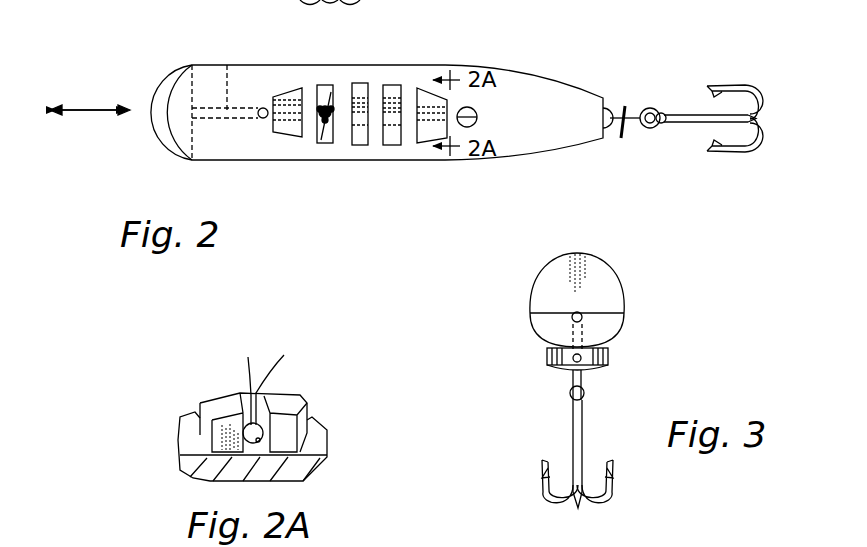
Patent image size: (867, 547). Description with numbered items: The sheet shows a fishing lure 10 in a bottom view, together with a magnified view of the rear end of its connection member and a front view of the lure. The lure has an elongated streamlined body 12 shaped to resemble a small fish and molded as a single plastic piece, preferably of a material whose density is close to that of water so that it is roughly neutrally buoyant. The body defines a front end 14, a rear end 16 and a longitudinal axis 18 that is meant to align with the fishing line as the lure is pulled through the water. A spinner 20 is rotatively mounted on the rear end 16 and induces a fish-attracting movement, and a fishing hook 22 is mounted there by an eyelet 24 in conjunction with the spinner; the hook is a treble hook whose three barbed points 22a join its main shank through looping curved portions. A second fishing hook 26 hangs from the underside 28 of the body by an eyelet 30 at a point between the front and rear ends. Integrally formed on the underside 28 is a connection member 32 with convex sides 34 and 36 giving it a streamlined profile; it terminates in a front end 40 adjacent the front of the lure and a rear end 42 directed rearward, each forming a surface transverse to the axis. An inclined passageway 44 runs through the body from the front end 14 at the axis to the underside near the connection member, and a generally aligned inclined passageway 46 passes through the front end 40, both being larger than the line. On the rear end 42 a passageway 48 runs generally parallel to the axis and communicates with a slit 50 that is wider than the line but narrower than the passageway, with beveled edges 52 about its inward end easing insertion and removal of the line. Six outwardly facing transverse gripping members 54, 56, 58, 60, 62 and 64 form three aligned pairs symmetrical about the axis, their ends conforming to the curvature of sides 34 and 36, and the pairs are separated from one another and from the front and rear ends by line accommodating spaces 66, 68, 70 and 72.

In FIG. 2, the fishing lure 10 is at (549, 69).
In FIG. 2, the body 12 is at (566, 84).
In FIG. 2A, the body 12 is at (188, 452).
In FIG. 3, the body 12 is at (626, 312).
In FIG. 2, the front end 14 is at (173, 64).
In FIG. 3, the front end 14 is at (556, 286).
In FIG. 2, the rear end 16 is at (624, 90).
In FIG. 2, the longitudinal axis 18 is at (100, 108).
In FIG. 2, the spinner 20 is at (620, 134).
In FIG. 2, the fishing hook 22 is at (688, 128).
In FIG. 2, the barbed points 22a is at (716, 156).
In FIG. 2, the eyelet 24 is at (640, 128).
In FIG. 2, the second fishing hook 26 is at (326, 121).
In FIG. 3, the second fishing hook 26 is at (584, 432).
In FIG. 2, the underside 28 is at (528, 150).
In FIG. 3, the underside 28 is at (548, 358).
In FIG. 2, the eyelet 30 is at (331, 96).
In FIG. 3, the eyelet 30 is at (570, 385).
In FIG. 2, the connection member 32 is at (270, 130).
In FIG. 2A, the connection member 32 is at (320, 402).
In FIG. 3, the connection member 32 is at (611, 373).
In FIG. 2, the convex side 34 is at (423, 144).
In FIG. 2, the convex side 36 is at (390, 66).
In FIG. 2, the front end of connection member 40 is at (274, 96).
In FIG. 2, the rear end of connection member 42 is at (449, 96).
In FIG. 2A, the rear end of connection member 42 is at (215, 432).
In FIG. 2, the inclined passageway 44 is at (227, 67).
In FIG. 3, the inclined passageway 44 is at (583, 319).
In FIG. 2, the inclined passageway 46 is at (276, 100).
In FIG. 3, the inclined passageway 46 is at (582, 358).
In FIG. 2A, the passageway 48 is at (262, 442).
In FIG. 2A, the slit 50 is at (257, 405).
In FIG. 2A, the beveled edges 52 is at (265, 383).
In FIG. 2, the gripping member 54 is at (316, 140).
In FIG. 2, the gripping member 56 is at (318, 85).
In FIG. 2, the gripping member 58 is at (366, 146).
In FIG. 2, the gripping member 60 is at (358, 83).
In FIG. 2, the gripping member 62 is at (398, 146).
In FIG. 2, the gripping member 64 is at (408, 88).
In FIG. 2, the line accommodating space 66 is at (303, 89).
In FIG. 2, the line accommodating space 68 is at (343, 142).
In FIG. 2, the line accommodating space 70 is at (384, 86).
In FIG. 2, the line accommodating space 72 is at (436, 100).